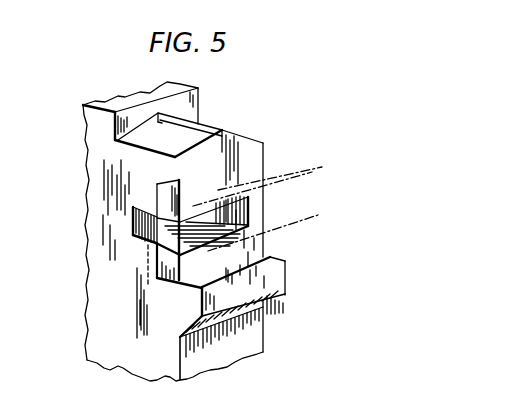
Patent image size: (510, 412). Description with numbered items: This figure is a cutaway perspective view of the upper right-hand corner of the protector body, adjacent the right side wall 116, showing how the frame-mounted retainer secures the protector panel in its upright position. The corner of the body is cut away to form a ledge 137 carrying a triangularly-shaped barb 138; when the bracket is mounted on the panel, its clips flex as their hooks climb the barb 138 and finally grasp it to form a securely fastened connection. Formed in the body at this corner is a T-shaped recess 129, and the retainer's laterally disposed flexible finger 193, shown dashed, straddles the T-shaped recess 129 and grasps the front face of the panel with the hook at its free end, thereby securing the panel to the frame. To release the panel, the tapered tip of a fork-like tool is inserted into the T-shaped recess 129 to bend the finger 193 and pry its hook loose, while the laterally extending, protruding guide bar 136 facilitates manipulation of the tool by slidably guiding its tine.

The right side wall 116 is at (245, 165).
The T-shaped recess 129 is at (132, 232).
The guide bar 136 is at (280, 278).
The ledge 137 is at (191, 142).
The barb 138 is at (118, 141).
The flexible finger 193 is at (293, 198).